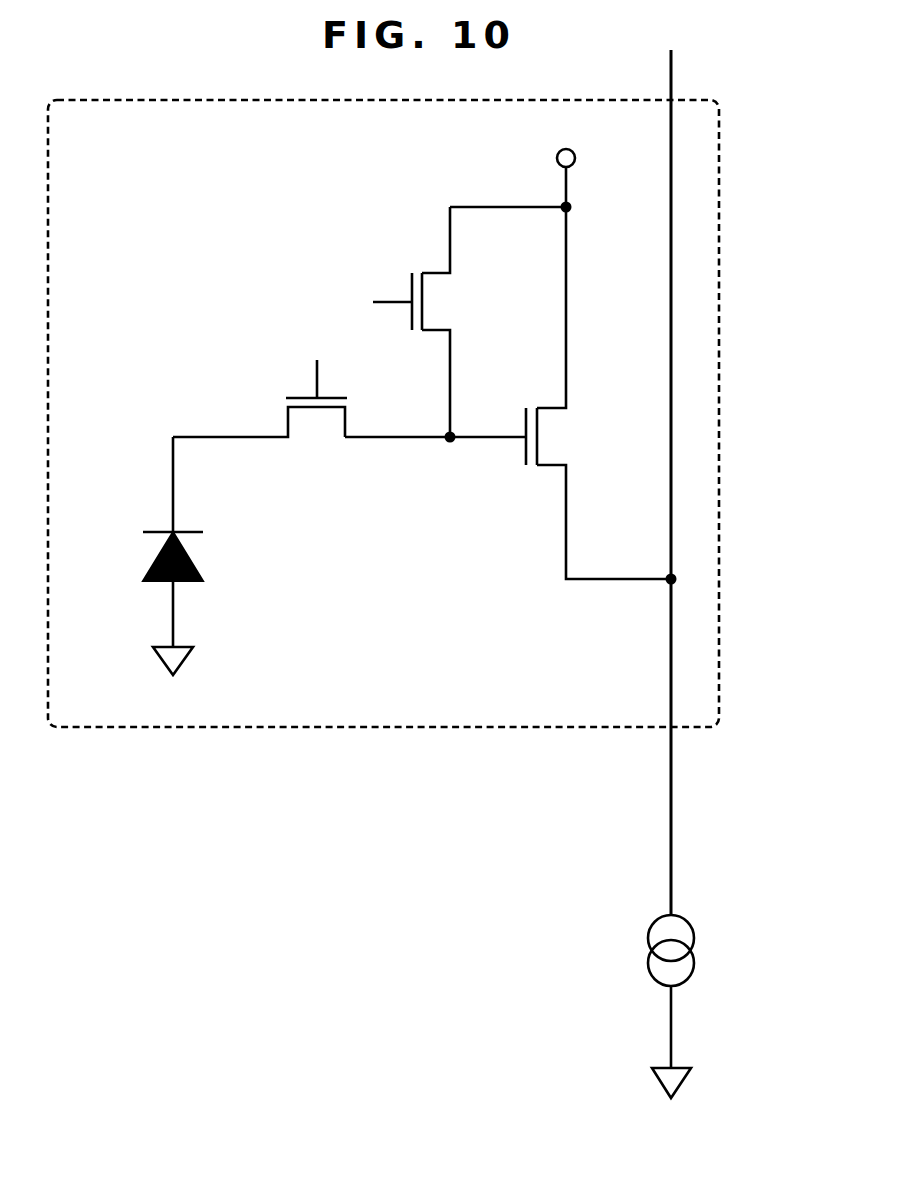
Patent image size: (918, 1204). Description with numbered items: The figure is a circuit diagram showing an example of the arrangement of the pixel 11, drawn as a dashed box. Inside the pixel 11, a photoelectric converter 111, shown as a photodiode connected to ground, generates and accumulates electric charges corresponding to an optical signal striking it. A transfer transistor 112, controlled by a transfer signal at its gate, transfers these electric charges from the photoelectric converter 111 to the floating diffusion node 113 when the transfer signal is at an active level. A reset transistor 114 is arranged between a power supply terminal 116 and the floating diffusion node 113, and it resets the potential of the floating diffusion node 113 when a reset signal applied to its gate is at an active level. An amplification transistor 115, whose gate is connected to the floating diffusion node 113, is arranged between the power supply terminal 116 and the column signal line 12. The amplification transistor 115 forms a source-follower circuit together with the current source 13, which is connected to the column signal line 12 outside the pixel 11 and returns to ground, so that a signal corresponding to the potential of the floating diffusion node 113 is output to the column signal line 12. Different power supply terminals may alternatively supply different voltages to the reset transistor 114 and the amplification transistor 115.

The pixel 11 is at (720, 628).
The column signal line 12 is at (671, 822).
The current source 13 is at (695, 937).
The photoelectric converter 111 is at (203, 562).
The transfer transistor 112 is at (320, 435).
The floating diffusion node 113 is at (423, 437).
The reset transistor 114 is at (452, 300).
The amplification transistor 115 is at (562, 437).
The power supply terminal 116 is at (556, 160).